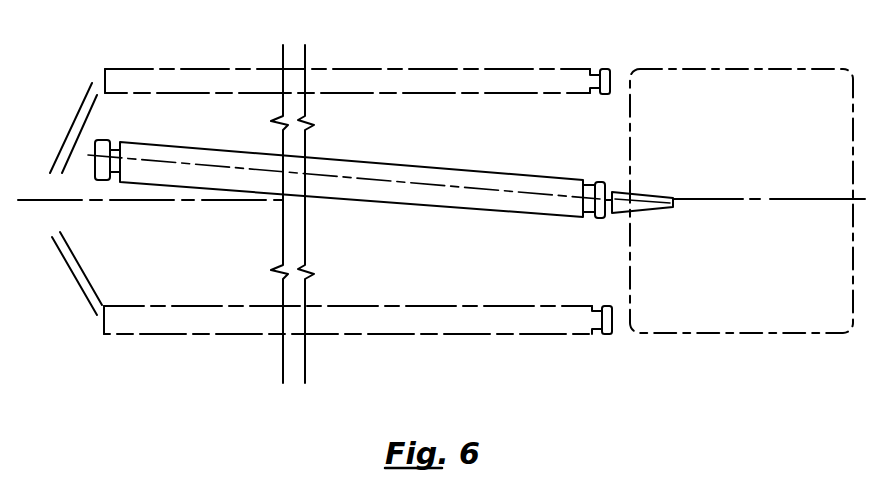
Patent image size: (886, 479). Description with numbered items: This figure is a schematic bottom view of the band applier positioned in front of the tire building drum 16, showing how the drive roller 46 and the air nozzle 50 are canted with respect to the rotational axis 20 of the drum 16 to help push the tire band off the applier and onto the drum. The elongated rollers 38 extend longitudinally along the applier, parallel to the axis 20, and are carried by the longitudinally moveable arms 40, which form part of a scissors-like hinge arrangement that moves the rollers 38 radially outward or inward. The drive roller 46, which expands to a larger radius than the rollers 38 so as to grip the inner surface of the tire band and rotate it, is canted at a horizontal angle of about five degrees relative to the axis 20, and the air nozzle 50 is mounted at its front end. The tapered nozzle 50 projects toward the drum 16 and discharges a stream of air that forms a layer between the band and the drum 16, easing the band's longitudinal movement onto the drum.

The collapsible cylindrical drum 16 is at (684, 68).
The longitudinal axis 20 is at (60, 203).
The rollers 38 is at (451, 68).
The moveable arms 40 is at (85, 270).
The drive roller 46 is at (490, 172).
The air nozzle 50 is at (652, 197).